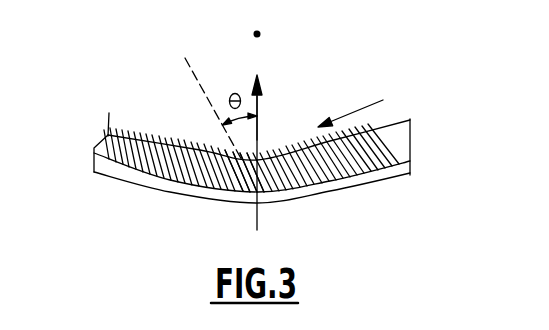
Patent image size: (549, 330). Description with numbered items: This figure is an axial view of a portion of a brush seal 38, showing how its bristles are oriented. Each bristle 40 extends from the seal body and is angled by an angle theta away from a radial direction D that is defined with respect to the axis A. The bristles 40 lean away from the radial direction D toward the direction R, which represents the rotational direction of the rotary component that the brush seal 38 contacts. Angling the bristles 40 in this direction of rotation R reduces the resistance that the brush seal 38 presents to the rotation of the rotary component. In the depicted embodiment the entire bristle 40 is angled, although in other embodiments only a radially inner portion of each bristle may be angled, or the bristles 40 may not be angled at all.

The brush seal 38 is at (375, 175).
The bristle 40 is at (250, 175).
The axis A is at (257, 131).
The radial direction D is at (268, 122).
The direction of rotation R is at (358, 102).